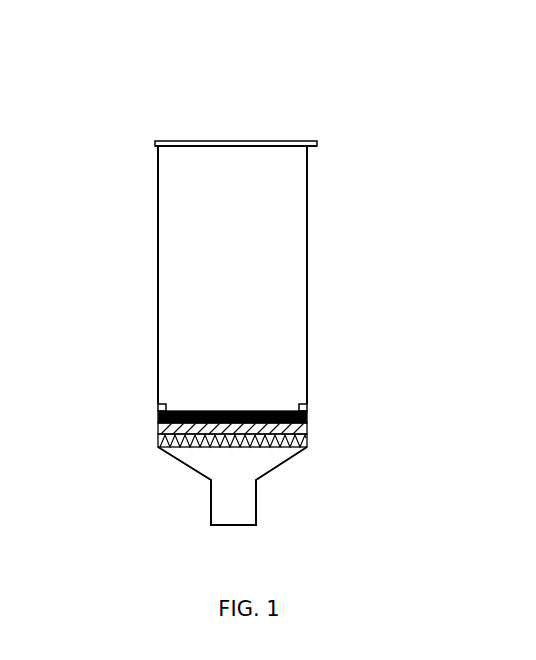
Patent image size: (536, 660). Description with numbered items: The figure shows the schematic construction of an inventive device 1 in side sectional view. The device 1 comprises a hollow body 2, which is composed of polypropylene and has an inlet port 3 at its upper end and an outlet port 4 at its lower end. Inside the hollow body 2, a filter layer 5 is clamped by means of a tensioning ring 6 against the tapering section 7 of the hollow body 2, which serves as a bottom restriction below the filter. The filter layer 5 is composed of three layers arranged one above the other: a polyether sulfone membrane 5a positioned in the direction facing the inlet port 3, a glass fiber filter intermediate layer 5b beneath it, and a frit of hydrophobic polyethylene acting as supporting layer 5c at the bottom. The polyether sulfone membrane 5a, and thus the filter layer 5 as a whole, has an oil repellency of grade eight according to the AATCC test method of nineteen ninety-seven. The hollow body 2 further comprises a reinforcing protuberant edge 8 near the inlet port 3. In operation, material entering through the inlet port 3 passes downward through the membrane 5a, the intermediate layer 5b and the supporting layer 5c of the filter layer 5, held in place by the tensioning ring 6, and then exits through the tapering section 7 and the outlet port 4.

The device 1 is at (314, 128).
The hollow body 2 is at (220, 285).
The inlet port 3 is at (218, 129).
The outlet port 4 is at (224, 517).
The filter layer 5 is at (248, 434).
The polyether sulfone membrane 5a is at (149, 407).
The glass fiber filter intermediate layer 5b is at (149, 420).
The supporting layer 5c is at (149, 439).
The tensioning ring 6 is at (299, 393).
The tapering section 7 is at (299, 444).
The reinforcing protuberant edge 8 is at (273, 140).